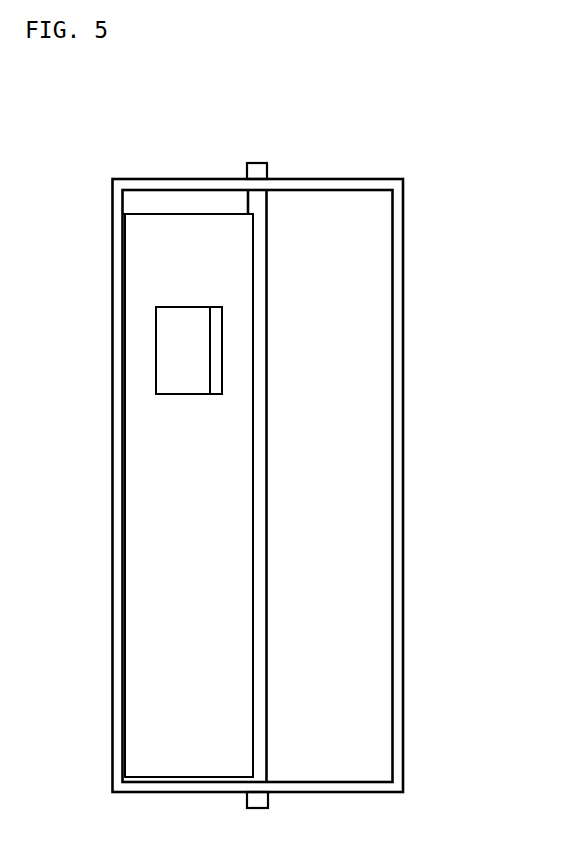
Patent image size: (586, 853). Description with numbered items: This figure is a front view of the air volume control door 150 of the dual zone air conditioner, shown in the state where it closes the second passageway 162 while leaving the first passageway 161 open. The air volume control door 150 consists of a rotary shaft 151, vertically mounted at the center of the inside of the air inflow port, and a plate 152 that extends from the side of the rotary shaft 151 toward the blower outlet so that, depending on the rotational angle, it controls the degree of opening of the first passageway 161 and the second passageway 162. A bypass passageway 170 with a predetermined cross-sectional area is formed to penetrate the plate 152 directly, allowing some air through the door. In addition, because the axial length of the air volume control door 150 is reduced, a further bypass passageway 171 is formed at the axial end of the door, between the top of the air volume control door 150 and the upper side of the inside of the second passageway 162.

The air volume control door 150 is at (379, 486).
The rotary shaft 151 is at (262, 267).
The plate 152 is at (218, 283).
The first passageway 161 is at (341, 190).
The second passageway 162 is at (202, 190).
The bypass passageway 170 is at (157, 351).
The bypass passageway 171 is at (173, 205).